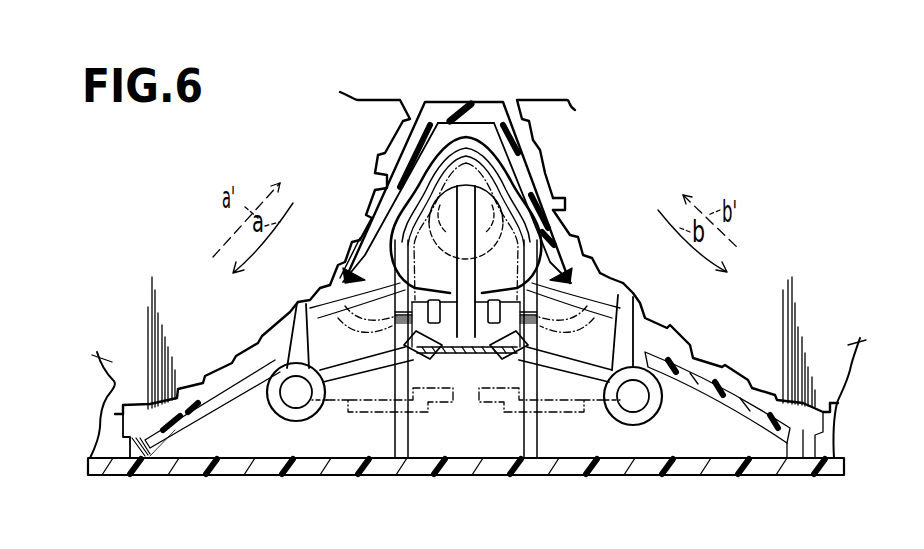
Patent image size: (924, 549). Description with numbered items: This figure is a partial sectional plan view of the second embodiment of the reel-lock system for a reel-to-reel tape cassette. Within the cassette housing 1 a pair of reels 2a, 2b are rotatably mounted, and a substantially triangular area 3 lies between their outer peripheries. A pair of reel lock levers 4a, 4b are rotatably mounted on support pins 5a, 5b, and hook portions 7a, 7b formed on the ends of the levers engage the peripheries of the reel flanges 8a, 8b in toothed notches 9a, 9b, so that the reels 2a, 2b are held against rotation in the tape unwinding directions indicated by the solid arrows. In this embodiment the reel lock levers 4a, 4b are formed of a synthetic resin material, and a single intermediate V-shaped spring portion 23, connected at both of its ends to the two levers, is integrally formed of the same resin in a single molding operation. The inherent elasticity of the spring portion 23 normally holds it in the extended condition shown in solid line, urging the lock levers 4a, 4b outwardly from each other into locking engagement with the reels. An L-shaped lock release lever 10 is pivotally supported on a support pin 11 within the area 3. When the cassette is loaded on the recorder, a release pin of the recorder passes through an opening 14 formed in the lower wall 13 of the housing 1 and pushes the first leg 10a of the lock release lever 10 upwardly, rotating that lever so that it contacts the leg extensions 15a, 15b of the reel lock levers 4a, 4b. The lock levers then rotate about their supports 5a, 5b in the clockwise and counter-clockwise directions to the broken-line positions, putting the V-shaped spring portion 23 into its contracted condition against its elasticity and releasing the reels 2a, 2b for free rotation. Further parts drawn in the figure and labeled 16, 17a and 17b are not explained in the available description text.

The cassette housing 1 is at (232, 462).
The reel 2a is at (104, 370).
The reel 2b is at (838, 371).
The substantially triangular area 3 is at (451, 416).
The reel lock lever 4a is at (298, 336).
The reel lock lever 4b is at (623, 335).
The support pin 5a is at (300, 400).
The support pin 5b is at (637, 400).
The hook portion 7a is at (316, 298).
The hook portion 7b is at (627, 290).
The reel flange 8a is at (352, 108).
The reel flange 8b is at (548, 104).
The toothed notch 9a is at (378, 178).
The toothed notch 9b is at (560, 207).
The lock release lever 10 is at (482, 207).
The first leg of lock release lever 10a is at (471, 185).
The support pin 11 is at (388, 330).
The lower wall of cassette housing 13 is at (272, 440).
The opening 14 is at (408, 186).
The leg extension of reel lock lever 15a is at (393, 392).
The leg extension of reel lock lever 15b is at (535, 393).
The cylindrical body 16 is at (500, 215).
The right pawl 17a is at (492, 325).
The left pawl 17b is at (440, 325).
The V-shaped spring portion 23 is at (444, 123).